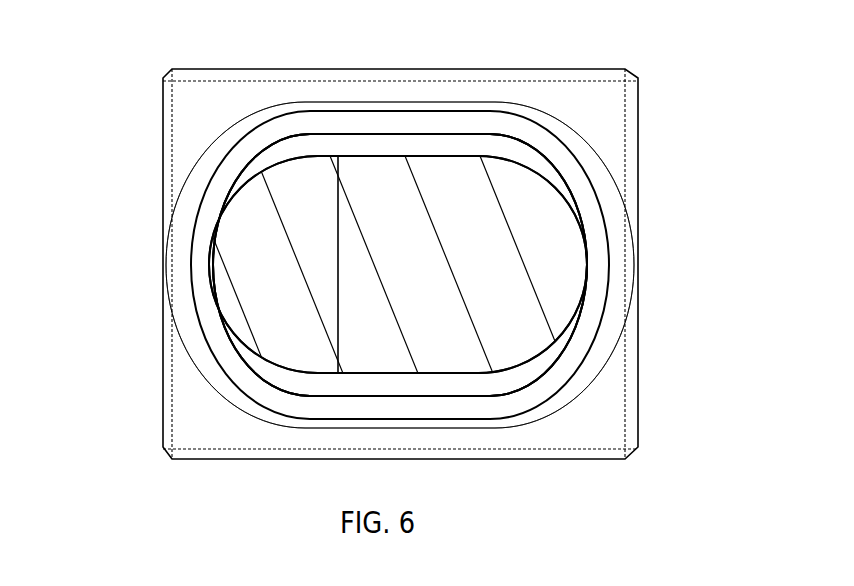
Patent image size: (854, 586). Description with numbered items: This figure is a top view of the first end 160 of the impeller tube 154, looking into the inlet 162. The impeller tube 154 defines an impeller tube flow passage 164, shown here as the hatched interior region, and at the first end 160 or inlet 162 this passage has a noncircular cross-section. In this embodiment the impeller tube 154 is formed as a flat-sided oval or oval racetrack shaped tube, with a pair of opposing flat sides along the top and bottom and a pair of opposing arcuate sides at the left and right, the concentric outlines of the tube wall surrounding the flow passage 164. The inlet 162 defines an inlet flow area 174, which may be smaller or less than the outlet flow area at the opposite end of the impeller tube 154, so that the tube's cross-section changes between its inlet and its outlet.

The impeller tube 154 is at (552, 46).
The first end 160 is at (571, 190).
The inlet 162 is at (574, 257).
The impeller tube flow passage 164 is at (500, 254).
The inlet flow area 174 is at (368, 252).